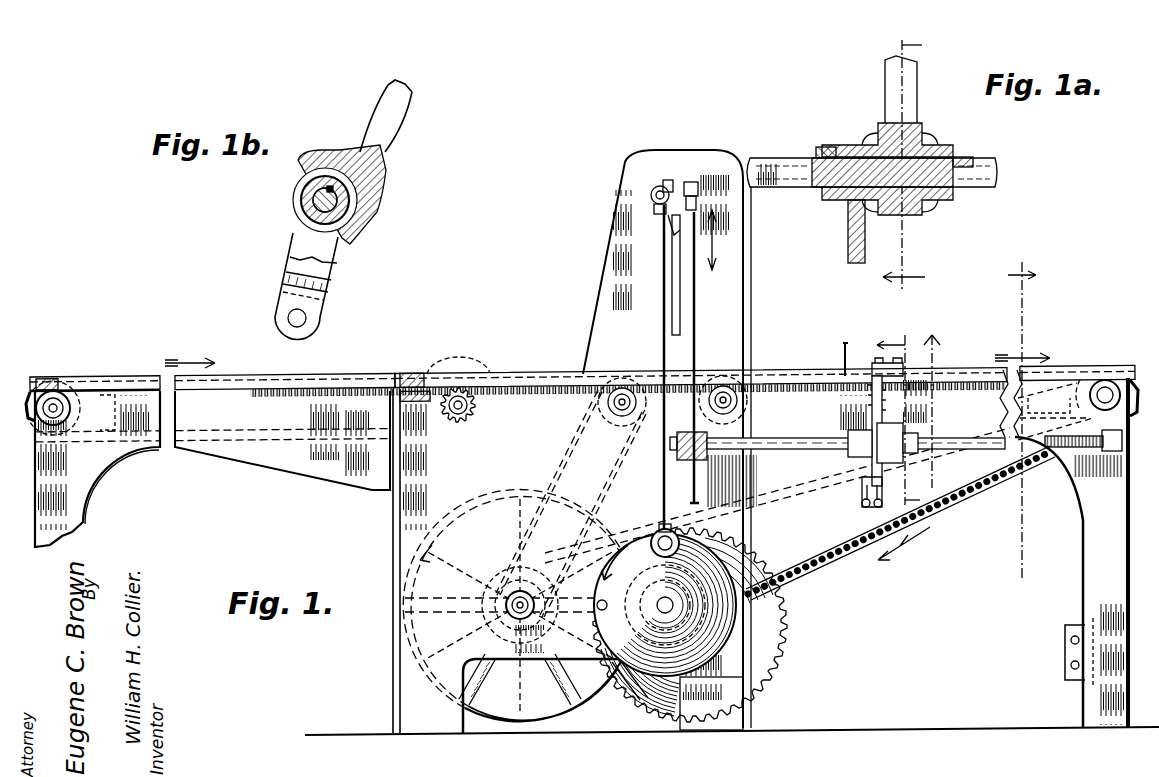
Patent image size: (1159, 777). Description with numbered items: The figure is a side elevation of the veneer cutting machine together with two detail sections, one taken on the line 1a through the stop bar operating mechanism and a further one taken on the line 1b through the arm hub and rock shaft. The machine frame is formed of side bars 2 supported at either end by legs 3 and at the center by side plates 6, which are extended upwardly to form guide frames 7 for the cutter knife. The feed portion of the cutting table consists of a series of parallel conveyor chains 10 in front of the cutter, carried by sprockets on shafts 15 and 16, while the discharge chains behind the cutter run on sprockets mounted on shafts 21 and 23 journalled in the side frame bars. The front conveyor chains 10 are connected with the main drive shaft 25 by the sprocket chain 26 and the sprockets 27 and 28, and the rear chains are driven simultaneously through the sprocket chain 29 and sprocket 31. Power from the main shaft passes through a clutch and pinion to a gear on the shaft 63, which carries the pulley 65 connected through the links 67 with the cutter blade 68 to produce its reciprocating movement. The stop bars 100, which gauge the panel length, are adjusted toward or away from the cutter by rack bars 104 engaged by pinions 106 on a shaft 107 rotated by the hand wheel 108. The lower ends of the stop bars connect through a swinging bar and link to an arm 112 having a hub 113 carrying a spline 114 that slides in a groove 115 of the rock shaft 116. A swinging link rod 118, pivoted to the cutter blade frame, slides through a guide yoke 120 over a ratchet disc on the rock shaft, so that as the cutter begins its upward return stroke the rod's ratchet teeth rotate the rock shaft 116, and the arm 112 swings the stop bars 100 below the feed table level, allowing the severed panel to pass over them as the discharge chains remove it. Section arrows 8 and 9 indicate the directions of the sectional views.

In FIG. 1, the side bars 2 is at (218, 424).
In FIG. 1, the legs 3 is at (77, 524).
In FIG. 1, the side plates 6 is at (390, 513).
In FIG. 1, the guide frames 7 is at (736, 252).
In FIG. 1, the section line 8 is at (1022, 410).
In FIG. 1, the section line 9 is at (932, 407).
In FIG. 1, the conveyor chains 10 is at (100, 377).
In FIG. 1, the shaft 15 is at (53, 398).
In FIG. 1, the shaft 16 is at (595, 374).
In FIG. 1, the shaft 21 is at (745, 368).
In FIG. 1, the shaft 23 is at (1106, 383).
In FIG. 1, the main drive shaft 25 is at (515, 606).
In FIG. 1, the sprocket chain 26 is at (555, 455).
In FIG. 1, the sprocket 27 is at (478, 605).
In FIG. 1, the sprocket 28 is at (600, 425).
In FIG. 1, the sprocket chain 29 is at (824, 584).
In FIG. 1, the sprocket 31 is at (1092, 450).
In FIG. 1, the shaft 63 is at (722, 618).
In FIG. 1, the pulley 65 is at (752, 620).
In FIG. 1, the links 67 is at (657, 272).
In FIG. 1, the cutter blade 68 is at (672, 237).
In FIG. 1, the stop bars 100 is at (845, 343).
In FIG. 1, the rack bars 104 is at (526, 376).
In FIG. 1, the pinions 106 is at (425, 376).
In FIG. 1, the shaft 107 is at (458, 415).
In FIG. 1, the hand wheel 108 is at (459, 364).
In FIG. 1A, the arm 112 is at (849, 235).
In FIG. 1A, the hub 113 is at (868, 140).
In FIG. 1A, the spline 114 is at (826, 146).
In FIG. 1A, the groove 115 is at (966, 156).
In FIG. 1, the rock shaft 116 is at (805, 437).
In FIG. 1A, the rock shaft 116 is at (994, 166).
In FIG. 1, the swinging link rod 118 is at (699, 300).
In FIG. 1, the guide yoke 120 is at (755, 485).
In FIG. 1, the section line 1a is at (898, 419).
In FIG. 1A, the section line 1b is at (915, 162).